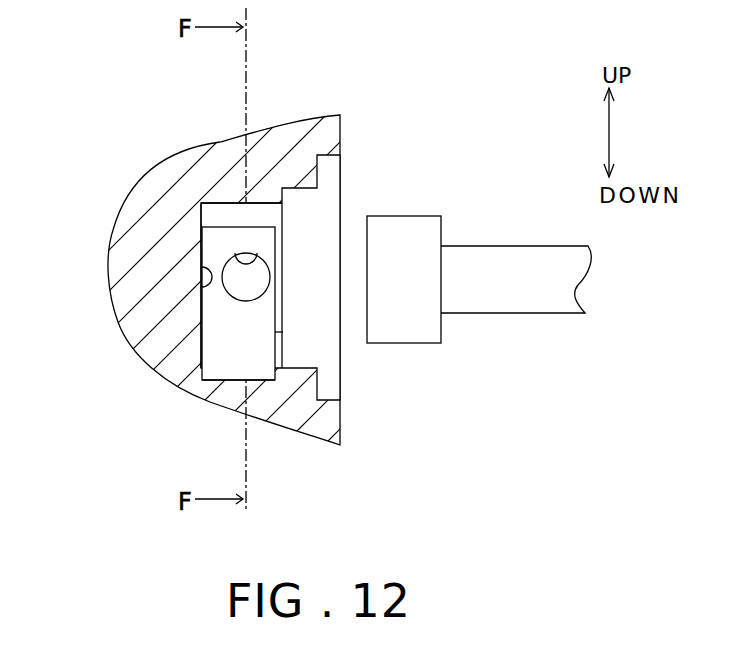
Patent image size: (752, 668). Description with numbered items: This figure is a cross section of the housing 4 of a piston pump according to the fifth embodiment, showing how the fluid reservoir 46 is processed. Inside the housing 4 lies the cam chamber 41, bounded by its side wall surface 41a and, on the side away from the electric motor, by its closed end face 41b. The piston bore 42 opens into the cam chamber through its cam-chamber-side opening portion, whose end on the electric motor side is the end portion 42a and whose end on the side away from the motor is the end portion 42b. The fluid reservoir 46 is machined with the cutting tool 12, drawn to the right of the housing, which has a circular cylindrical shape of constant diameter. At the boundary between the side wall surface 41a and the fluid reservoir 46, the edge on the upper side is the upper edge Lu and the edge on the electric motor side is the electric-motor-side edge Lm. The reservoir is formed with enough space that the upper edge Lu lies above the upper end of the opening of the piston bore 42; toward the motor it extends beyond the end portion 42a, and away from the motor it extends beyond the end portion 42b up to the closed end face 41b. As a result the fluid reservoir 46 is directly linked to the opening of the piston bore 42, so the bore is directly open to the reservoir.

The housing body 4 is at (178, 146).
The cutting tool 12 is at (415, 237).
The cam chamber 41 is at (312, 235).
The side wall surface 41a is at (270, 276).
The closed end face 41b is at (200, 286).
The piston bore 42 is at (257, 253).
The end portion on the electric motor side 42a is at (270, 215).
The end portion on the side away from the electric motor 42b is at (204, 265).
The fluid reservoir 46 is at (225, 358).
The upper edge Lu is at (235, 253).
The electric-motor-side edge Lm is at (283, 332).